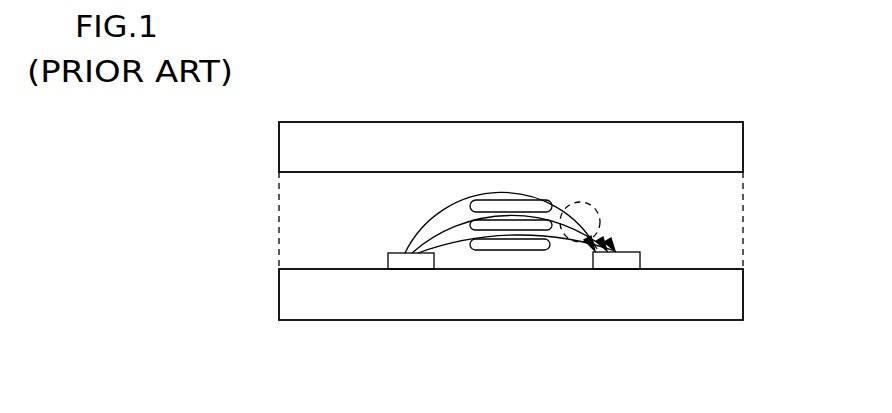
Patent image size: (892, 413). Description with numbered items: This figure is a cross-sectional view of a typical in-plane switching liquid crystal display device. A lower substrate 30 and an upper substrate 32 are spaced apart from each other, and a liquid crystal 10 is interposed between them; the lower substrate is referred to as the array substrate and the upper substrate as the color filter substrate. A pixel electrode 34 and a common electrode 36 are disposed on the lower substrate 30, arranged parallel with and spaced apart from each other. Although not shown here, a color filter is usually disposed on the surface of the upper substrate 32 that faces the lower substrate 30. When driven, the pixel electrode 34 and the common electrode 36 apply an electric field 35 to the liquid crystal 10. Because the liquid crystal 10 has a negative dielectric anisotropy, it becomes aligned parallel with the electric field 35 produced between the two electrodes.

The liquid crystal 10 is at (750, 172).
The lower substrate 30 is at (750, 269).
The upper substrate 32 is at (750, 122).
The pixel electrode 34 is at (402, 265).
The electric field 35 is at (588, 208).
The common electrode 36 is at (610, 262).